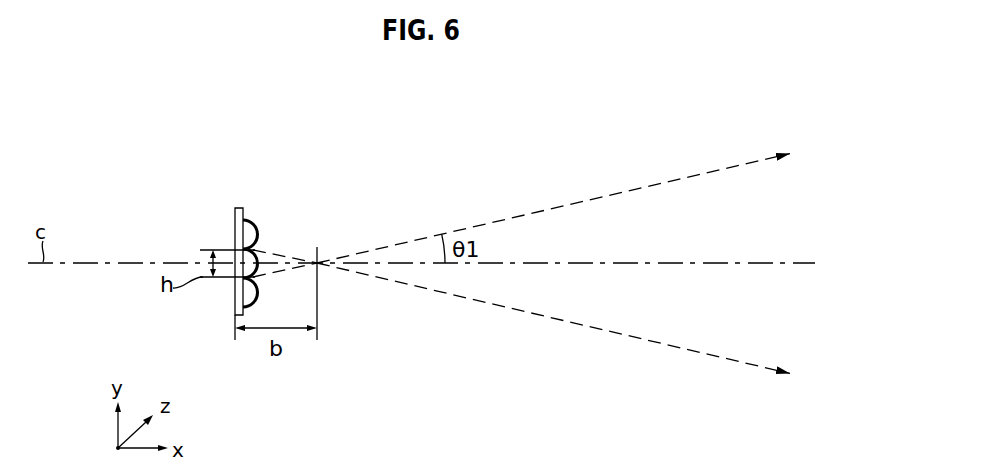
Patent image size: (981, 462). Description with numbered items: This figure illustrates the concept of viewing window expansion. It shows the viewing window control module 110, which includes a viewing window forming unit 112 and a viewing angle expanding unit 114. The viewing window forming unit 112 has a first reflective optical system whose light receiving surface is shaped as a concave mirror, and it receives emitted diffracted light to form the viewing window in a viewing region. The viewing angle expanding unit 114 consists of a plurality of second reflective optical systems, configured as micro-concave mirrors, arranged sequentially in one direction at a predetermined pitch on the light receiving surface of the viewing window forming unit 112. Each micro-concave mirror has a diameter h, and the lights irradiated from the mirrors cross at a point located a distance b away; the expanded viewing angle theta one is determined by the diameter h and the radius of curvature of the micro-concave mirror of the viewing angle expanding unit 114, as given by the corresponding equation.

The viewing window control module 110 is at (242, 202).
The viewing window forming unit 112 is at (235, 222).
The viewing angle expanding unit 114 is at (252, 228).